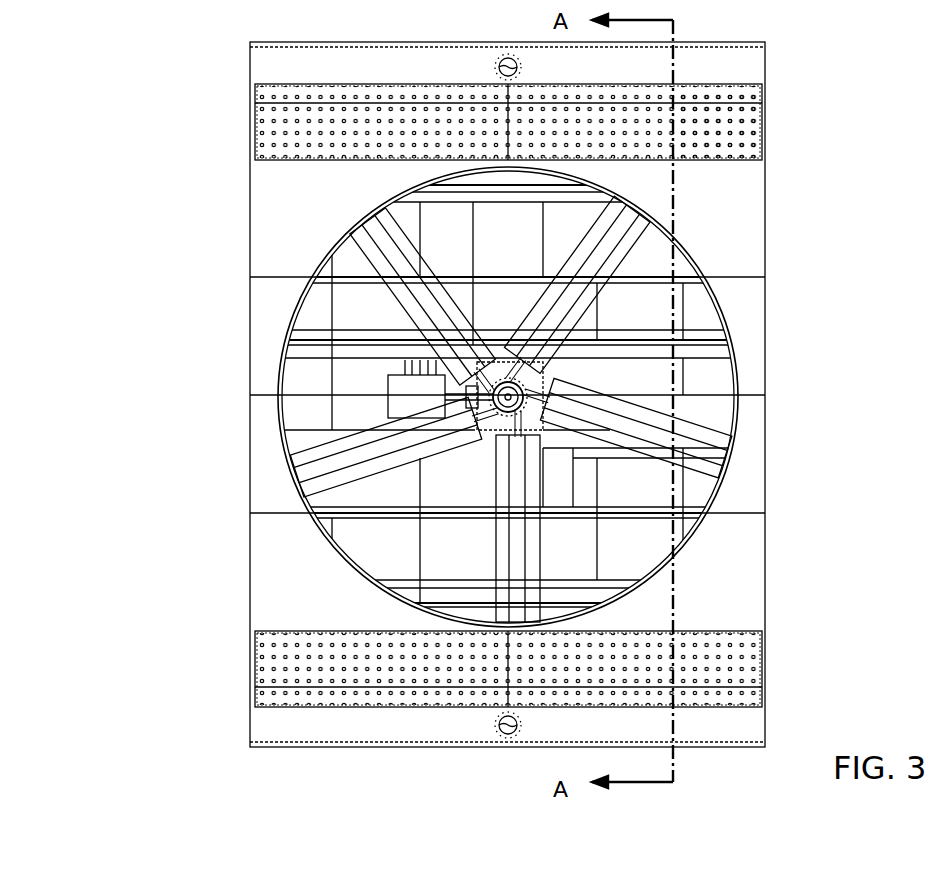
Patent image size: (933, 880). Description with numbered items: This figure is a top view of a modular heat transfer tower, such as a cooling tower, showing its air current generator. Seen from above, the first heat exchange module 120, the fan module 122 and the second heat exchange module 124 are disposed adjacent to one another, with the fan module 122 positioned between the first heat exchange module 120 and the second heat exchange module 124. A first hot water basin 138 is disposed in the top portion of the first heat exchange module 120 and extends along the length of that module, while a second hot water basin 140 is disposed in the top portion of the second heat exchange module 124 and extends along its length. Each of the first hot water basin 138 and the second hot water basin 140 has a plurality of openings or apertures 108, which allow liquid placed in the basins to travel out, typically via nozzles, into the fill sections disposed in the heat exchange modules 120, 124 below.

The apertures 108 is at (752, 97).
The first heat exchange module 120 is at (250, 583).
The fan module 122 is at (250, 450).
The second heat exchange module 124 is at (250, 228).
The first hot water basin 138 is at (250, 663).
The second hot water basin 140 is at (250, 133).